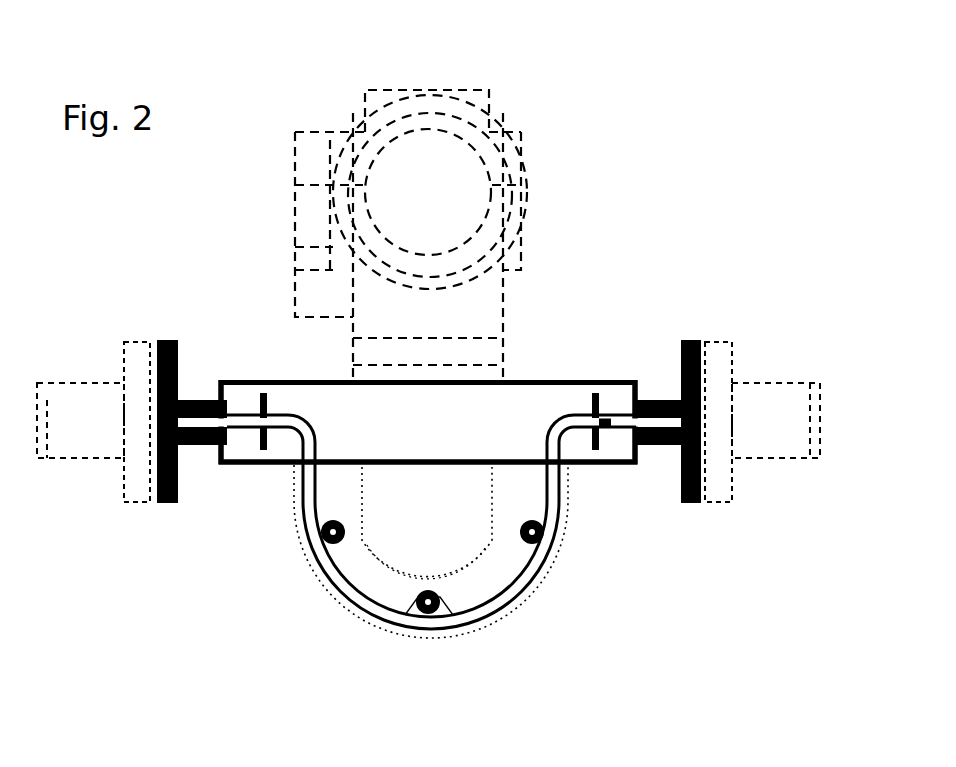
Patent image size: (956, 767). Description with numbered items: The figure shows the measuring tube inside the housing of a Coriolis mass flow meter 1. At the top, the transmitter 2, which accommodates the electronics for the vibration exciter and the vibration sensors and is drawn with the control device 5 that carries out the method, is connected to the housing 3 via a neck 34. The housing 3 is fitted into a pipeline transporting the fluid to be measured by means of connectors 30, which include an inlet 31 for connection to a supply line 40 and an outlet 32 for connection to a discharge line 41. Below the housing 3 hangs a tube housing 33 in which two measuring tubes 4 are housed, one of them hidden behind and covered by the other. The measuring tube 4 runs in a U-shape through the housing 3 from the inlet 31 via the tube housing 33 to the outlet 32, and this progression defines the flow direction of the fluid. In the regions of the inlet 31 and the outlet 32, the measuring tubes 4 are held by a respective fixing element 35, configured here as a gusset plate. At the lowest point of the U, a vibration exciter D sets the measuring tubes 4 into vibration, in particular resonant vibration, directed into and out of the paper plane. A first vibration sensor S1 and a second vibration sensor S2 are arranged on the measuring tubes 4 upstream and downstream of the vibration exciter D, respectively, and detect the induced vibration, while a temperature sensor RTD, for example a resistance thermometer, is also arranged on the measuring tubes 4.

The Coriolis mass flow meter 1 is at (668, 209).
The transmitter 2 is at (425, 187).
The housing 3 is at (298, 372).
The measuring tube 4 is at (363, 612).
The control device 5 is at (300, 140).
The connectors 30 is at (658, 400).
The inlet 31 is at (160, 340).
The outlet 32 is at (693, 340).
The tube housing 33 is at (565, 520).
The neck 34 is at (468, 353).
The fixing element 35 is at (252, 392).
The supply line 40 is at (95, 403).
The discharge line 41 is at (773, 402).
The first vibration sensor S1 is at (320, 540).
The second vibration sensor S2 is at (537, 540).
The vibration exciter D is at (430, 610).
The temperature sensor RTD is at (612, 430).